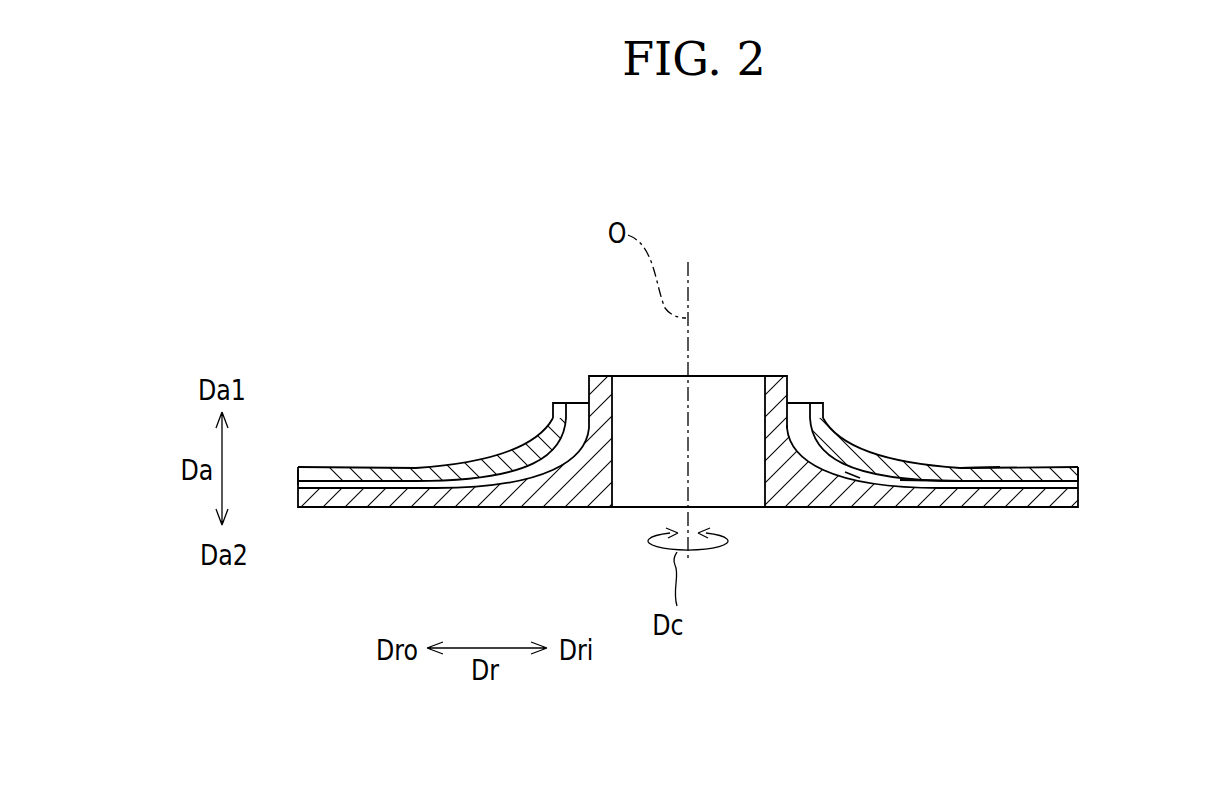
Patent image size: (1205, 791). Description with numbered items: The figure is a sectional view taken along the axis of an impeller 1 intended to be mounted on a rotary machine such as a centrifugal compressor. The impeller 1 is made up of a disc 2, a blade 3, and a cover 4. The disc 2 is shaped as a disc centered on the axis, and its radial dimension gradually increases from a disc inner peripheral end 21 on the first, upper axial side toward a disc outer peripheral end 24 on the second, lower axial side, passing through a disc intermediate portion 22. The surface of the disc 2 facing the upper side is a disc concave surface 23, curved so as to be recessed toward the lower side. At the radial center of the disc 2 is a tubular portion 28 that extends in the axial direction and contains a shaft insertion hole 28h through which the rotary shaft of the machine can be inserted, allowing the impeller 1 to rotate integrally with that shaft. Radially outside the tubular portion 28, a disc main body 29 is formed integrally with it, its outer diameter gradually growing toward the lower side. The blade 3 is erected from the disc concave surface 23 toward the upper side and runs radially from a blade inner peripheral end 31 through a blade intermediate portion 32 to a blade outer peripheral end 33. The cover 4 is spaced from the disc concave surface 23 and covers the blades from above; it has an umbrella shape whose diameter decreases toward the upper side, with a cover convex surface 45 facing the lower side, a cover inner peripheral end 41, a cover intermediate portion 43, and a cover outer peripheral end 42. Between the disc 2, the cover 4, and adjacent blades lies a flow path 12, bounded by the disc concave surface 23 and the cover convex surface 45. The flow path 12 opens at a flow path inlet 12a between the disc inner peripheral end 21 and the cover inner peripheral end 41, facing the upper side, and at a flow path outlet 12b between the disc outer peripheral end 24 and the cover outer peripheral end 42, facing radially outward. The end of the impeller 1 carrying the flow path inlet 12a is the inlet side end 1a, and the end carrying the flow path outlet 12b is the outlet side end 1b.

The impeller 1 is at (1028, 280).
The inlet side end 1a is at (591, 375).
The outlet side end 1b is at (298, 477).
The disc 2 is at (870, 508).
The blade 3 is at (447, 494).
The cover 4 is at (1005, 465).
The flow path 12 is at (940, 508).
The flow path inlet 12a is at (798, 425).
The flow path outlet 12b is at (1078, 482).
The disc inner peripheral end 21 is at (792, 402).
The disc intermediate portion 22 is at (893, 508).
The disc concave surface 23 is at (938, 482).
The disc outer peripheral end 24 is at (1070, 508).
The tubular portion 28 is at (612, 412).
The shaft insertion hole 28h is at (745, 508).
The disc main body 29 is at (380, 494).
The blade inner peripheral end 31 is at (806, 432).
The blade intermediate portion 32 is at (917, 485).
The blade outer peripheral end 33 is at (1078, 488).
The cover inner peripheral end 41 is at (852, 470).
The cover outer peripheral end 42 is at (1073, 463).
The cover intermediate portion 43 is at (978, 472).
The cover convex surface 45 is at (988, 508).